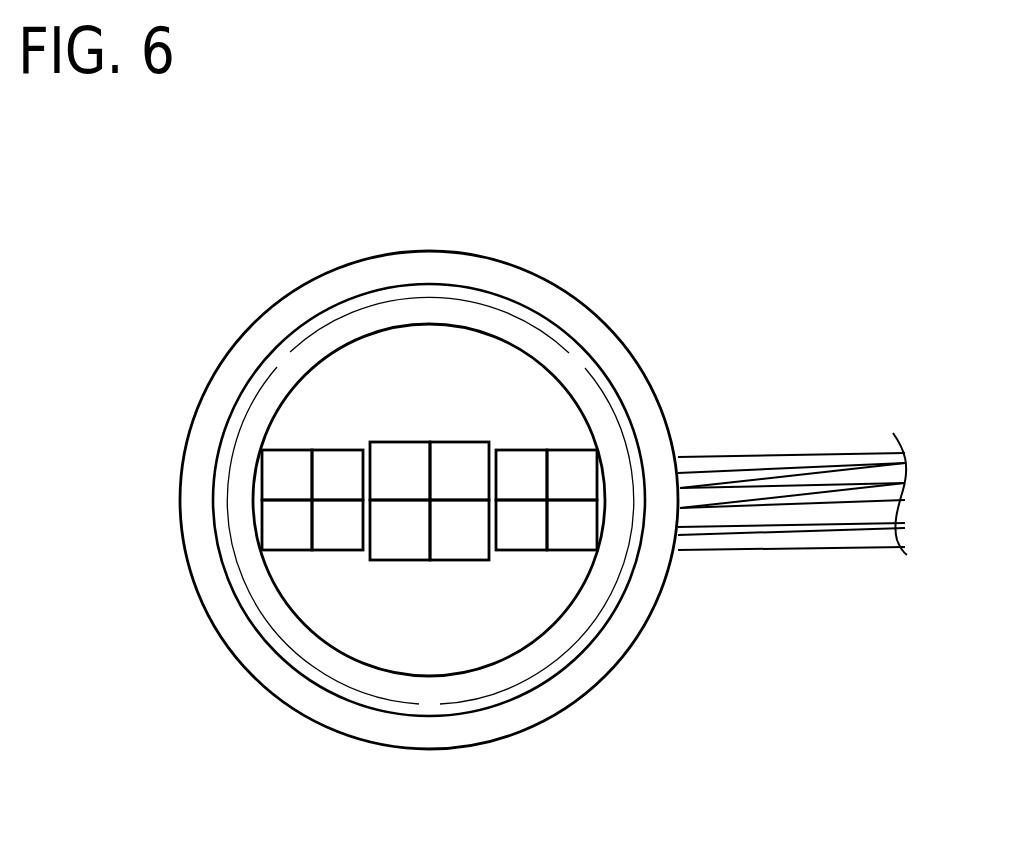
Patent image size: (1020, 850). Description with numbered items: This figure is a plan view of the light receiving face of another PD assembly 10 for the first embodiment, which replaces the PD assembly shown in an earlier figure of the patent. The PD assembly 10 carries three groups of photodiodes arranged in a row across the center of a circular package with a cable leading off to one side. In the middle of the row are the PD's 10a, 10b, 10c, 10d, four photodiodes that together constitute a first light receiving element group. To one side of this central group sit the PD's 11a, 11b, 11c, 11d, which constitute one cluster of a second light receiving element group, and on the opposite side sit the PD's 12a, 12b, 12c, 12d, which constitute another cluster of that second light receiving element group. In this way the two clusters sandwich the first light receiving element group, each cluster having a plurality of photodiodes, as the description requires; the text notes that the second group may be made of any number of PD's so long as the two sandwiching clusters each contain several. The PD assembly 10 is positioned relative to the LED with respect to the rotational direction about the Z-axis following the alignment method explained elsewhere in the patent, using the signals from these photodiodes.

The PD assembly 10 is at (665, 330).
The PD 10a is at (448, 470).
The PD 10b is at (408, 470).
The PD 10c is at (400, 537).
The PD 10d is at (455, 537).
The PD 11a is at (578, 472).
The PD 11b is at (523, 463).
The PD 11c is at (528, 535).
The PD 11d is at (580, 528).
The PD 12a is at (336, 472).
The PD 12b is at (277, 478).
The PD 12c is at (275, 530).
The PD 12d is at (336, 538).